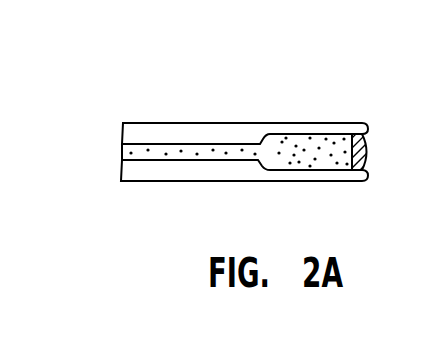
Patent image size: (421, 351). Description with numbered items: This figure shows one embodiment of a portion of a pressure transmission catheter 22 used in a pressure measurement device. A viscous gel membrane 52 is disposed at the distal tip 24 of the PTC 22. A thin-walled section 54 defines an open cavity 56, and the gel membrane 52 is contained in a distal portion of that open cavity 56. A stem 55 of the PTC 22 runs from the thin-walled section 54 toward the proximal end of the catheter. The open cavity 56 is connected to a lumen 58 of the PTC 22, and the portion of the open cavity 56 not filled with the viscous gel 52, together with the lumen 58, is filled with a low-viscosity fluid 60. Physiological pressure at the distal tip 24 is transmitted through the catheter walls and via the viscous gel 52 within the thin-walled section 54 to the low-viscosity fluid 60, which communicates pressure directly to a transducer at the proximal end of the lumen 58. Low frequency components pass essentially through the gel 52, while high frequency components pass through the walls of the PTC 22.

The pressure transmission catheter 22 is at (244, 113).
The lumen 58 is at (193, 144).
The distal tip 24 is at (370, 128).
The low-viscosity fluid 60 is at (228, 151).
The thin-walled section 54 is at (323, 143).
The open cavity 56 is at (303, 155).
The viscous gel membrane 52 is at (362, 168).
The stem 55 is at (162, 185).